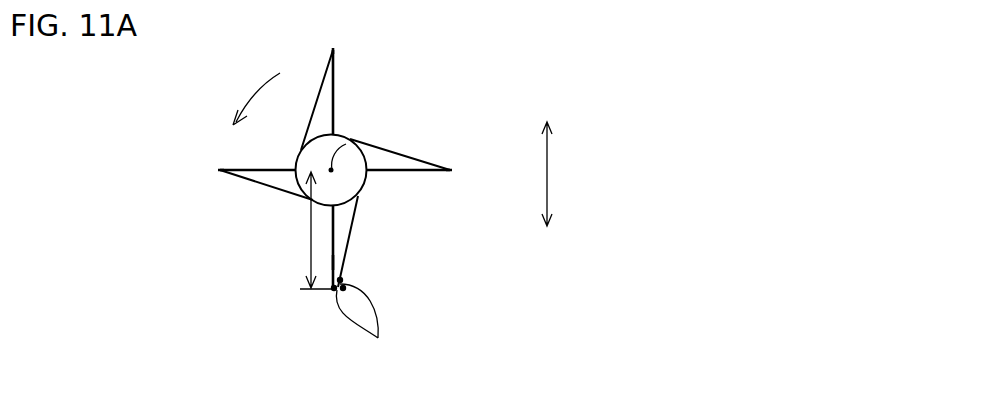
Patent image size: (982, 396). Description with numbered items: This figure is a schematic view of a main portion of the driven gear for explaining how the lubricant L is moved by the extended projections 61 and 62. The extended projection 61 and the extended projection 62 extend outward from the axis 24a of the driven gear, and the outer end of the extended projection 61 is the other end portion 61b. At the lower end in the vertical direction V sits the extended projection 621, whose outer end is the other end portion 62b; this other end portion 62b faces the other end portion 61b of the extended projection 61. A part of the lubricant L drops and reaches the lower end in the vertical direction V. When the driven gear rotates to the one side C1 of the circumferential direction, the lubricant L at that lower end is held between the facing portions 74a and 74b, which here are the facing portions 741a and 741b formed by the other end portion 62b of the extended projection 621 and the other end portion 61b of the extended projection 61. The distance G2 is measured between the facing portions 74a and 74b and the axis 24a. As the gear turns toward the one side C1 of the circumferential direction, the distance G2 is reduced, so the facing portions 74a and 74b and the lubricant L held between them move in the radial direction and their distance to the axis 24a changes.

The axis 24a is at (352, 137).
The extended projection 61 is at (335, 91).
The other end portion 61b is at (332, 262).
The extended projection 62 is at (358, 165).
The extended projection 621 is at (352, 229).
The other end portion 62b is at (344, 280).
The facing portion 74a is at (329, 197).
The facing portion 74b is at (329, 197).
The facing portion 741a is at (252, 327).
The facing portion 741b is at (335, 288).
The one side of the circumferential direction C1 is at (255, 92).
The distance G2 is at (296, 230).
The vertical direction V is at (549, 175).
The lubricant L is at (360, 326).